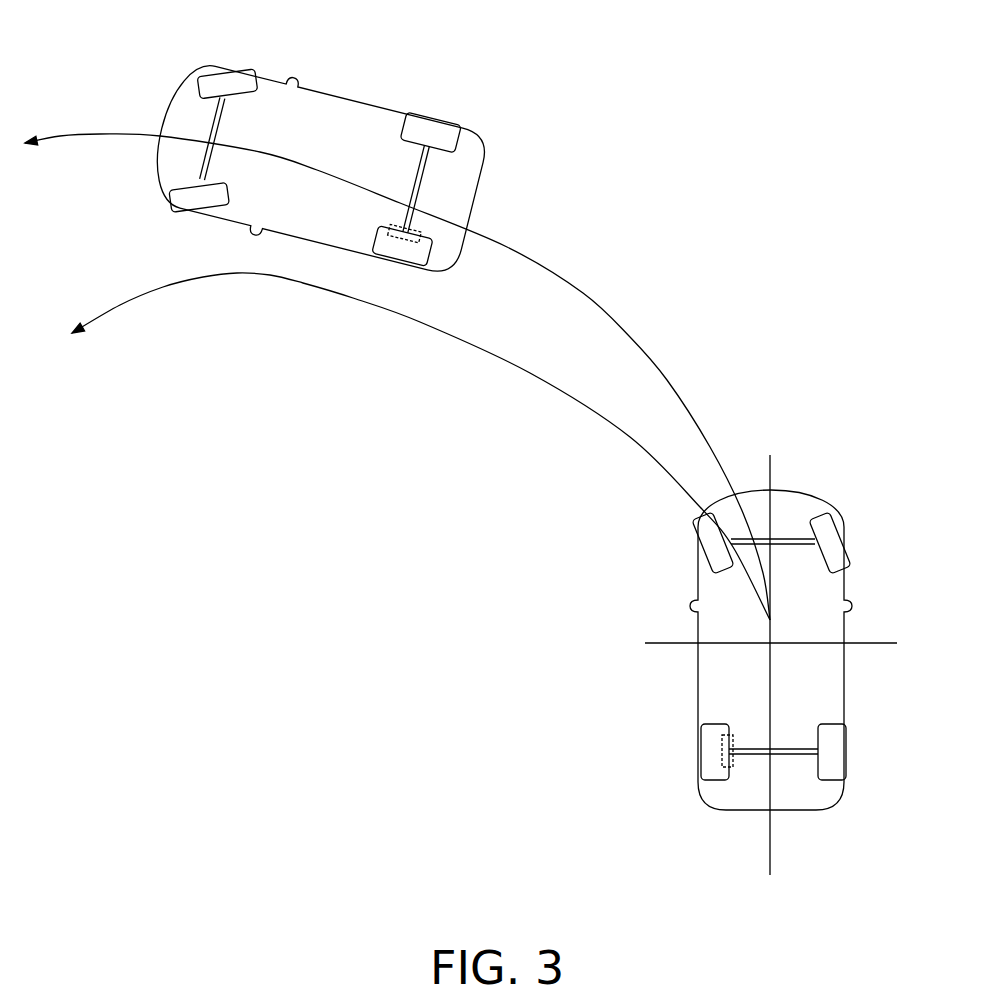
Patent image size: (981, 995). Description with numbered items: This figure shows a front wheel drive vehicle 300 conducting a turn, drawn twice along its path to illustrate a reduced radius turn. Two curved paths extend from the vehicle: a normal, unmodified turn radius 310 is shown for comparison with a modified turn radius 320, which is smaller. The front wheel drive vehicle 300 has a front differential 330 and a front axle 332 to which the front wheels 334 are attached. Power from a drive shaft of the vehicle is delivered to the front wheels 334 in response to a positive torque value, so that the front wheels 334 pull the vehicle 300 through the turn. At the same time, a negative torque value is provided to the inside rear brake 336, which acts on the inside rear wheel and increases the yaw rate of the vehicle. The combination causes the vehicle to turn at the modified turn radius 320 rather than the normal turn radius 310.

The front wheel drive vehicle 300 is at (360, 106).
The normal turn radius 310 is at (586, 295).
The modified turn radius 320 is at (165, 289).
The front differential 330 is at (210, 128).
The front axle 332 is at (800, 544).
The front wheels 334 is at (225, 82).
The inside rear brake 336 is at (416, 238).